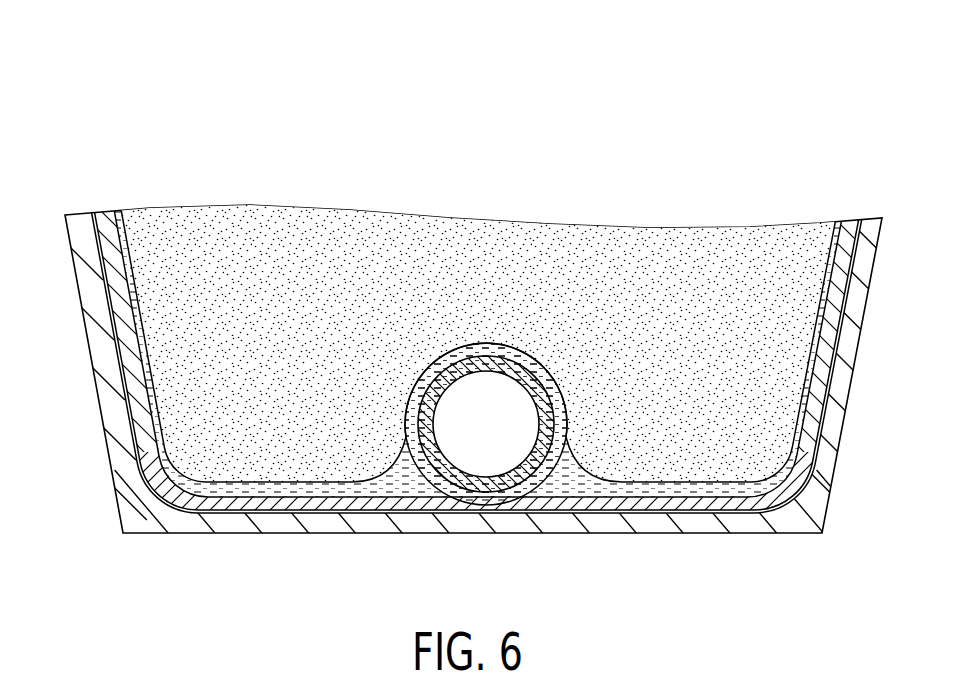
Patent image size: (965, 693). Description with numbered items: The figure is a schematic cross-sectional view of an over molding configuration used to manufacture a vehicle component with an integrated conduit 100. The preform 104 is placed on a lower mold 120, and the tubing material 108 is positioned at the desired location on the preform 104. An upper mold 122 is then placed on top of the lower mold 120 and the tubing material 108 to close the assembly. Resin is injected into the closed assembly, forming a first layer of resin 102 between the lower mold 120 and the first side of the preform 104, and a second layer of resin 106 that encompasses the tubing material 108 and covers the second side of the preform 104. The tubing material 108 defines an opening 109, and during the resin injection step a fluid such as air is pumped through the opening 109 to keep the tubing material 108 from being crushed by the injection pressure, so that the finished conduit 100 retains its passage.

The conduit 100 is at (451, 314).
The first layer of resin 102 is at (447, 510).
The preform 104 is at (748, 503).
The second layer of resin 106 is at (578, 483).
The tubing material 108 is at (507, 362).
The opening 109 is at (494, 440).
The lower mold 120 is at (326, 519).
The upper mold 122 is at (363, 230).